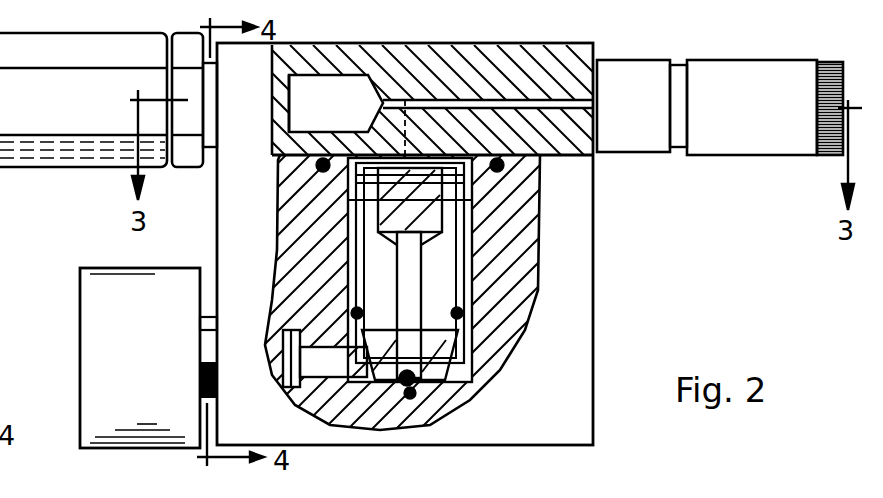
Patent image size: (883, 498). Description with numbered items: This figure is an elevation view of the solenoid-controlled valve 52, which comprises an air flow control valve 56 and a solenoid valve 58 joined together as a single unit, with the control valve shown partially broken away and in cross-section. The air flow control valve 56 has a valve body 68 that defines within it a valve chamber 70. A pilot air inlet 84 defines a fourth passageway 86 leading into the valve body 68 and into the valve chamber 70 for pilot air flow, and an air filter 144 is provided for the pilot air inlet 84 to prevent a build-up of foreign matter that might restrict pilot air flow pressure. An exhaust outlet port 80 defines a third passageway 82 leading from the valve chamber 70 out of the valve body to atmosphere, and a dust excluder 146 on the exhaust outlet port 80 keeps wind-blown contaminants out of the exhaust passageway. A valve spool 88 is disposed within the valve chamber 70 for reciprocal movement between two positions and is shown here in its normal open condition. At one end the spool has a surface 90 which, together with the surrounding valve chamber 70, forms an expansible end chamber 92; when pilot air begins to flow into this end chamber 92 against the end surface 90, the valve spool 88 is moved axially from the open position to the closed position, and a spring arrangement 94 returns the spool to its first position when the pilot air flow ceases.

The solenoid-controlled valve 52 is at (608, 48).
The air flow control valve 56 is at (402, 46).
The solenoid valve 58 is at (818, 108).
The valve body 68 is at (594, 330).
The valve chamber 70 is at (518, 290).
The exhaust outlet port 80 is at (272, 343).
The third passageway 82 is at (272, 378).
The pilot air inlet 84 is at (290, 97).
The fourth passageway 86 is at (308, 78).
The valve spool 88 is at (278, 277).
The end surface 90 is at (450, 202).
The expansible end chamber 92 is at (445, 195).
The spring arrangement 94 is at (440, 380).
The air filter 144 is at (91, 169).
The dust excluder 146 is at (78, 348).